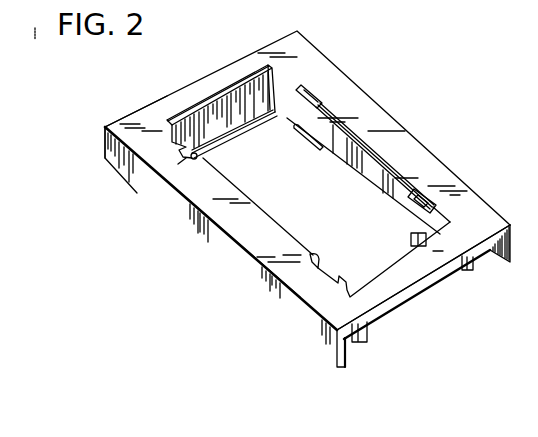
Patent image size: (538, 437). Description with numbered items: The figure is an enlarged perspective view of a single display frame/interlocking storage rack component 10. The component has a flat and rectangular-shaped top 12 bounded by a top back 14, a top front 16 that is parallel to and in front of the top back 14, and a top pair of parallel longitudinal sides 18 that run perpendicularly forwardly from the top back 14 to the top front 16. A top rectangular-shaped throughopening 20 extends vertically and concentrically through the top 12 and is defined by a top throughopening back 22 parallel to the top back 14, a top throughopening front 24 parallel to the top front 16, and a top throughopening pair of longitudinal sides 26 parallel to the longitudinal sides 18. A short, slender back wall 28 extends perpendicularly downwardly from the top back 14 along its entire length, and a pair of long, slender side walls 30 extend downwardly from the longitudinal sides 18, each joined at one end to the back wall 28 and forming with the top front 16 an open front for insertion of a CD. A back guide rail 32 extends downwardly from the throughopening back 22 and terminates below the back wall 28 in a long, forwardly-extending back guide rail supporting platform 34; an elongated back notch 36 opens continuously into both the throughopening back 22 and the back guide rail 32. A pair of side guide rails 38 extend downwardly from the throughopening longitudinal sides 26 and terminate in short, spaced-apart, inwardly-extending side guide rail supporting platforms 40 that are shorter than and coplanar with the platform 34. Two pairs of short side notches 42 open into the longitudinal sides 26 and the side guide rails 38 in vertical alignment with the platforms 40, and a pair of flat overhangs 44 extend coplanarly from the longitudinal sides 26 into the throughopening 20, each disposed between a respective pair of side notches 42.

The display frame/interlocking storage rack component 10 is at (146, 273).
The flat and rectangular-shaped top 12 is at (210, 181).
The top back 14 is at (172, 92).
The top front 16 is at (380, 310).
The top pair of parallel longitudinal sides 18 is at (230, 264).
The top rectangular-shaped throughopening 20 is at (293, 188).
The top throughopening back 22 is at (167, 130).
The top throughopening front 24 is at (383, 270).
The top throughopening pair of longitudinal sides 26 is at (325, 318).
The back wall 28 is at (105, 145).
The side walls 30 is at (333, 345).
The back guide rail 32 is at (232, 112).
The back guide rail supporting platform 34 is at (248, 128).
The back notch 36 is at (248, 76).
The side guide rails 38 is at (375, 181).
The side guide rail supporting platforms 40 is at (308, 132).
The side notches 42 is at (300, 86).
The overhangs 44 is at (279, 224).